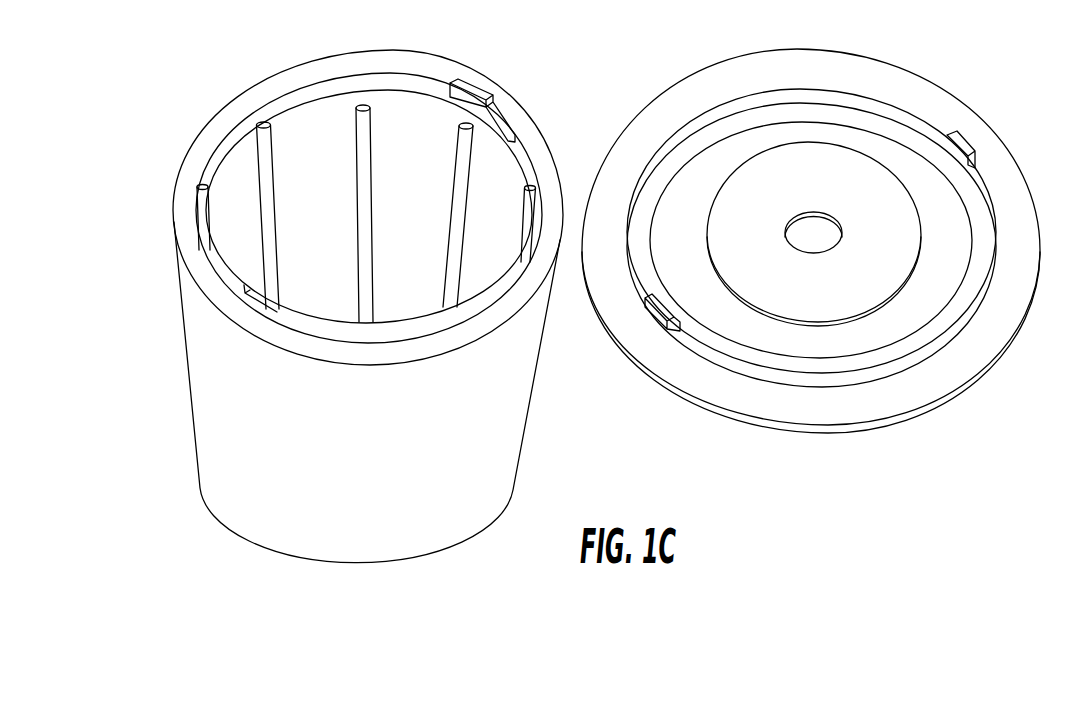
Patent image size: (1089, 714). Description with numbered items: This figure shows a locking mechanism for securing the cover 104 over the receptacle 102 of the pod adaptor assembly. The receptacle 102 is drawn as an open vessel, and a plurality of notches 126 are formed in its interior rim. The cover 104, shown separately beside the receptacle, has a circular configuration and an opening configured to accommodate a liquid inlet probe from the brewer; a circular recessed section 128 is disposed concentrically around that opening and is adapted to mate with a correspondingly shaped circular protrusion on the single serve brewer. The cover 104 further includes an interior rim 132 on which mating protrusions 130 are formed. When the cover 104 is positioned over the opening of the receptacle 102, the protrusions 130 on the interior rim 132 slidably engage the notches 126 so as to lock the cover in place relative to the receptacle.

The receptacle 102 is at (381, 447).
The cover 104 is at (713, 193).
The notches 126 is at (490, 126).
The circular recessed section 128 is at (418, 84).
The protrusions 130 is at (977, 159).
The interior rim 132 is at (745, 329).